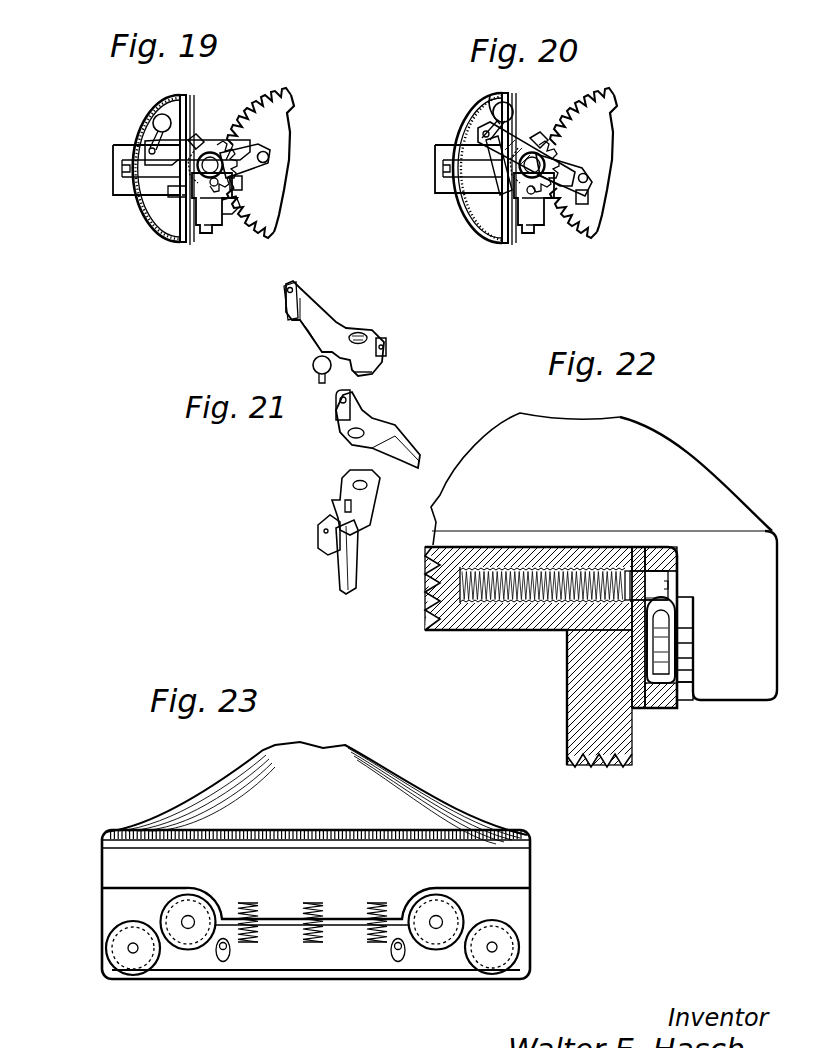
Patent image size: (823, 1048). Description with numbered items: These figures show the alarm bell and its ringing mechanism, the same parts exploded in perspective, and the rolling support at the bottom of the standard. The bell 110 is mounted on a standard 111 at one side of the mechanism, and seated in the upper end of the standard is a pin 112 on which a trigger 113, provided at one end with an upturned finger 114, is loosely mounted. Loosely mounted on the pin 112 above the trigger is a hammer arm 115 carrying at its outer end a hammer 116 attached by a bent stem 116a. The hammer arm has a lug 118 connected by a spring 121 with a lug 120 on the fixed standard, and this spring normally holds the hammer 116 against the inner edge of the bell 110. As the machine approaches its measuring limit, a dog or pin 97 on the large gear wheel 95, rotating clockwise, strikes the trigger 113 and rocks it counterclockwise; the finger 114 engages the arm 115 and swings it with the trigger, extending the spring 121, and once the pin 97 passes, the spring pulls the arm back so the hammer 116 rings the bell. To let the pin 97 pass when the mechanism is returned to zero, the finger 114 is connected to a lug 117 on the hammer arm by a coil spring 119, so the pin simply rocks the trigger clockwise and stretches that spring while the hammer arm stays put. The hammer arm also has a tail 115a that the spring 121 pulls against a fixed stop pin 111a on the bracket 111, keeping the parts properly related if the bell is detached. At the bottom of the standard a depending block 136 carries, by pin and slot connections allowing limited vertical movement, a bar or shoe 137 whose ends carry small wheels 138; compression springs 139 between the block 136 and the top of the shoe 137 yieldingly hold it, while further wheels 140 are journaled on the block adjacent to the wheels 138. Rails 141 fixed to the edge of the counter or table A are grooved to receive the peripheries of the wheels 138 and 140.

In FIG. 19, the gear wheel 95 is at (282, 118).
In FIG. 20, the gear wheel 95 is at (600, 118).
In FIG. 19, the dog or pin 97 is at (270, 156).
In FIG. 20, the dog or pin 97 is at (590, 180).
In FIG. 19, the bell 110 is at (142, 230).
In FIG. 20, the bell 110 is at (463, 210).
In FIG. 19, the standard 111 is at (115, 146).
In FIG. 20, the standard 111 is at (438, 148).
In FIG. 21, the standard 111 is at (338, 575).
In FIG. 19, the pin 111a is at (220, 184).
In FIG. 20, the pin 111a is at (527, 195).
In FIG. 21, the pin 111a is at (354, 508).
In FIG. 19, the pin 112 is at (210, 152).
In FIG. 20, the pin 112 is at (548, 162).
In FIG. 19, the trigger 113 is at (255, 148).
In FIG. 20, the trigger 113 is at (565, 170).
In FIG. 21, the trigger 113 is at (385, 424).
In FIG. 19, the upturned finger 114 is at (196, 136).
In FIG. 20, the upturned finger 114 is at (546, 128).
In FIG. 21, the upturned finger 114 is at (338, 402).
In FIG. 19, the hammer arm 115 is at (145, 156).
In FIG. 20, the hammer arm 115 is at (526, 154).
In FIG. 21, the hammer arm 115 is at (325, 308).
In FIG. 21, the tail 115a is at (368, 377).
In FIG. 19, the hammer 116 is at (158, 115).
In FIG. 20, the hammer 116 is at (511, 110).
In FIG. 21, the hammer 116 is at (313, 364).
In FIG. 20, the bent stem 116a is at (492, 96).
In FIG. 19, the lug 117 is at (172, 192).
In FIG. 20, the lug 117 is at (494, 160).
In FIG. 21, the lug 117 is at (284, 310).
In FIG. 19, the lug 118 is at (243, 182).
In FIG. 20, the lug 118 is at (589, 198).
In FIG. 21, the lug 118 is at (388, 345).
In FIG. 19, the coil spring 119 is at (190, 245).
In FIG. 20, the coil spring 119 is at (490, 130).
In FIG. 19, the lug 120 is at (211, 235).
In FIG. 20, the lug 120 is at (540, 235).
In FIG. 21, the lug 120 is at (320, 532).
In FIG. 19, the spring 121 is at (224, 215).
In FIG. 22, the depending block 136 is at (735, 615).
In FIG. 23, the depending block 136 is at (206, 976).
In FIG. 22, the bar or shoe 137 is at (687, 686).
In FIG. 23, the bar or shoe 137 is at (333, 955).
In FIG. 22, the wheels or rollers 138 is at (663, 647).
In FIG. 23, the wheels or rollers 138 is at (115, 948).
In FIG. 23, the compression springs 139 is at (367, 905).
In FIG. 22, the wheels or rollers 140 is at (672, 598).
In FIG. 23, the wheels or rollers 140 is at (189, 910).
In FIG. 22, the rails 141 is at (668, 546).
In FIG. 22, the counter or table A is at (577, 666).